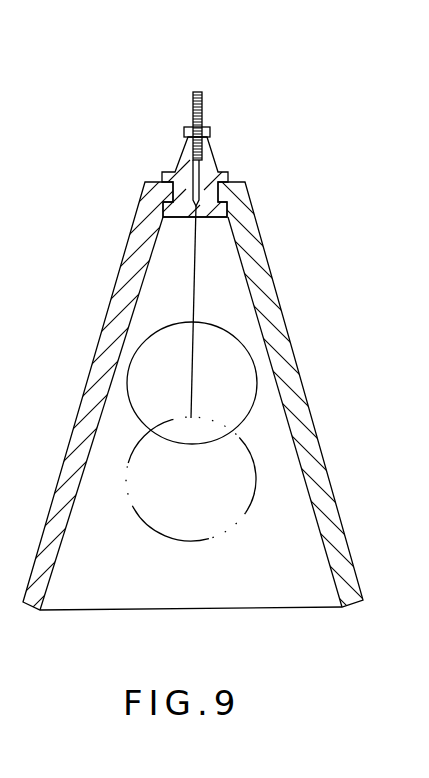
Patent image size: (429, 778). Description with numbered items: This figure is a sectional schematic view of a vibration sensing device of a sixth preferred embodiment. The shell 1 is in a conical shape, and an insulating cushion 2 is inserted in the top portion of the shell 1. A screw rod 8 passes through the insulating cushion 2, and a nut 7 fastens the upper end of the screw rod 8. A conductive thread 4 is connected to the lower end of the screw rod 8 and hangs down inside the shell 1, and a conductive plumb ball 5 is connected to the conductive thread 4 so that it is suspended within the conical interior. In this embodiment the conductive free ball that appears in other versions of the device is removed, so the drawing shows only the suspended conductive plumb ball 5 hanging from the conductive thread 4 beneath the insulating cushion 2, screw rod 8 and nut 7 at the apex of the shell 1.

The shell 1 is at (317, 437).
The insulating cushion 2 is at (177, 138).
The conductive thread 4 is at (200, 293).
The conductive plumb ball 5 is at (245, 372).
The nut 7 is at (212, 130).
The screw rod 8 is at (193, 92).